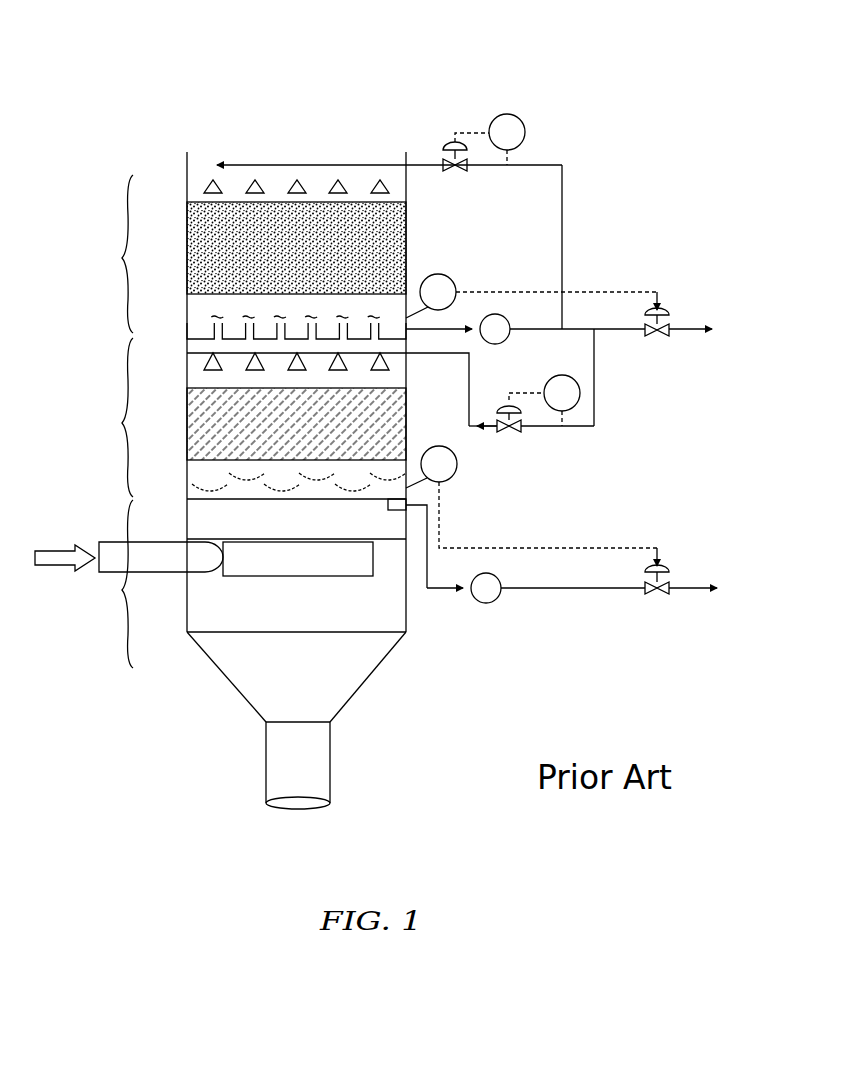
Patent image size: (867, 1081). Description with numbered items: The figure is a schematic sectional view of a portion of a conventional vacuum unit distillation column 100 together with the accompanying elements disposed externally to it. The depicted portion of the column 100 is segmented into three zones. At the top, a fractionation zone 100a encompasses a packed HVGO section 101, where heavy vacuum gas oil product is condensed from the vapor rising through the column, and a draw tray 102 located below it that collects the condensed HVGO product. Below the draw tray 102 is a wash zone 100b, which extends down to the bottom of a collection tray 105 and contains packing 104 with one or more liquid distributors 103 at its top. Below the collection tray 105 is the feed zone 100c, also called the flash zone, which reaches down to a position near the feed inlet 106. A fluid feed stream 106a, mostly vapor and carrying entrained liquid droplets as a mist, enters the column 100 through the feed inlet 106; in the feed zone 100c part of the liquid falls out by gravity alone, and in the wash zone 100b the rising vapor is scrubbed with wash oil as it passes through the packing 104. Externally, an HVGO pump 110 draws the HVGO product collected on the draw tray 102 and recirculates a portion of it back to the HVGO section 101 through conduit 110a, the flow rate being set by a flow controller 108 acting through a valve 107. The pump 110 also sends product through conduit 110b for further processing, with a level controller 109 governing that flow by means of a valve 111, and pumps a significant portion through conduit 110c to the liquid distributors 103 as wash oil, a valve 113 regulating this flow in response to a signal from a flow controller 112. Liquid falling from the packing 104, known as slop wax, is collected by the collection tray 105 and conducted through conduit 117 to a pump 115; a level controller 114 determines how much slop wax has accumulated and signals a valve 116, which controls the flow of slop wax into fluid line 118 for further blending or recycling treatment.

The column 100 is at (110, 60).
The fractionation zone 100a is at (105, 254).
The wash zone 100b is at (105, 417).
The feed zone 100c is at (106, 584).
The HVGO section 101 is at (185, 222).
The draw tray 102 is at (187, 308).
The liquid distributors 103 is at (187, 365).
The packing 104 is at (187, 410).
The collection tray 105 is at (187, 468).
The feed inlet 106 is at (105, 542).
The fluid feed stream 106a is at (55, 548).
The valve 107 is at (445, 143).
The flow controller 108 is at (525, 118).
The level controller 109 is at (453, 277).
The HVGO pump 110 is at (503, 315).
The conduit 110a is at (563, 205).
The conduit 110b is at (700, 327).
The conduit 110c is at (597, 360).
The valve 111 is at (659, 305).
The flow controller 112 is at (543, 383).
The valve 113 is at (507, 431).
The level controller 114 is at (457, 474).
The pump 115 is at (498, 598).
The valve 116 is at (660, 562).
The conduit 117 is at (432, 530).
The fluid line 118 is at (693, 583).